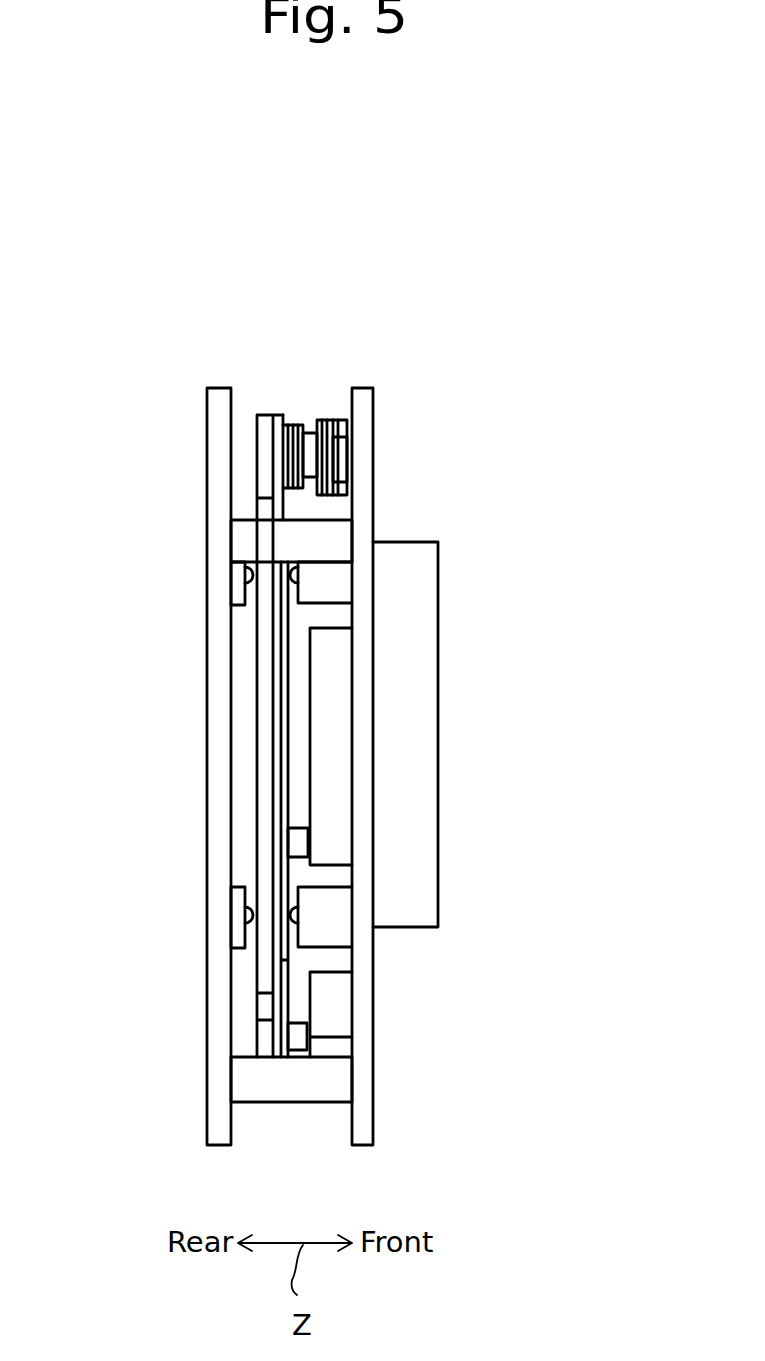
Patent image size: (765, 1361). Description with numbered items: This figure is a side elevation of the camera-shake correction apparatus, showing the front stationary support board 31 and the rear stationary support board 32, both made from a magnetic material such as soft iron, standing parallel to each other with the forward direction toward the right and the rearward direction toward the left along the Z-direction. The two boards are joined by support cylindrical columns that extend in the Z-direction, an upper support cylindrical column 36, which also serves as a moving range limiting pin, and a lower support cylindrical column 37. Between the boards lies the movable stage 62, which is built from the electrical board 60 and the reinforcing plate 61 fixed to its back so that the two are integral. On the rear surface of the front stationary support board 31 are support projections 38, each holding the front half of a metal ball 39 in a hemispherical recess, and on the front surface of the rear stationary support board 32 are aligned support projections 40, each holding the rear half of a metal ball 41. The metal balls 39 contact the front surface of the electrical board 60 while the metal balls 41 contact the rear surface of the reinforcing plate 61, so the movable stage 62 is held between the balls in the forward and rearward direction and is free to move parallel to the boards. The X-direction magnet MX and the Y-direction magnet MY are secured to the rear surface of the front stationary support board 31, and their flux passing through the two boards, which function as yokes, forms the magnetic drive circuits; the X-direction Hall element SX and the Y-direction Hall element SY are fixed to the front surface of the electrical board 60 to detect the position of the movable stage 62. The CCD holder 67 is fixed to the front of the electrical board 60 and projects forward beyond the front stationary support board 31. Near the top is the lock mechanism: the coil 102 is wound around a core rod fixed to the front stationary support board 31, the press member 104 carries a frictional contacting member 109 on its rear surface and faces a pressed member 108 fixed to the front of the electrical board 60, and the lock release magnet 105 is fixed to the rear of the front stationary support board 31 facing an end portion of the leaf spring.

The front stationary support board 31 is at (367, 1105).
The rear stationary support board 32 is at (207, 1129).
The upper support cylindrical column 36 is at (247, 530).
The lower support cylindrical column 37 is at (247, 1087).
The support projection 38 is at (340, 585).
The metal ball 39 is at (291, 577).
The support projection 40 is at (232, 597).
The metal ball 41 is at (240, 573).
The electrical board 60 is at (279, 416).
The reinforcing plate 61 is at (256, 416).
The movable stage 62 is at (249, 299).
The CCD holder 67 is at (417, 802).
The coil 102 is at (328, 419).
The press member 104 is at (310, 431).
The lock release magnet 105 is at (345, 457).
The pressed member 108 is at (288, 447).
The frictional contacting member 109 is at (293, 422).
The X-direction magnet MX is at (338, 708).
The Y-direction magnet MY is at (338, 1013).
The X-direction Hall element SX is at (287, 834).
The Y-direction Hall element SY is at (297, 1035).